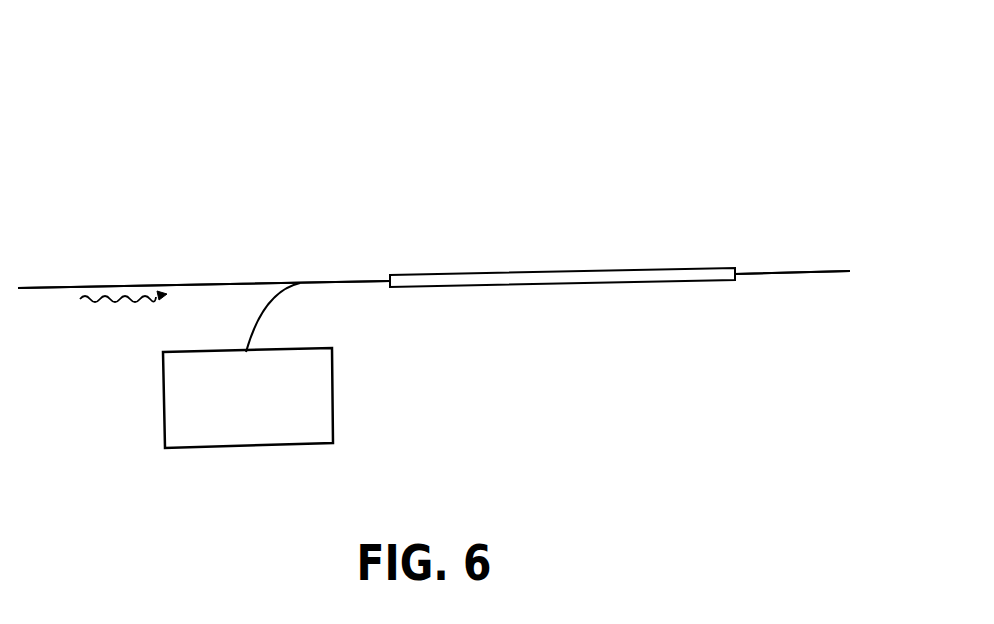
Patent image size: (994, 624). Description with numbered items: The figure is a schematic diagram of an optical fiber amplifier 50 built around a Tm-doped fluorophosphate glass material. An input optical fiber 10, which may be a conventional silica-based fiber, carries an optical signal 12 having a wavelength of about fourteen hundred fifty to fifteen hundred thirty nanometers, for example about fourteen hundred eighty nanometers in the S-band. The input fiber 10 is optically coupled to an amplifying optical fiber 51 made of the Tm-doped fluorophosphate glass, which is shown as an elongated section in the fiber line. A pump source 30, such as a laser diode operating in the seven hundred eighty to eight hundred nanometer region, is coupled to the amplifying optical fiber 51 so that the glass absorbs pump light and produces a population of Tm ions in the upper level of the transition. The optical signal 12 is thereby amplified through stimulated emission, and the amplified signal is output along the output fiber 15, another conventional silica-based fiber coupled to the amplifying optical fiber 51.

The optical fiber amplifier 50 is at (253, 147).
The input optical fiber 10 is at (186, 283).
The optical signal 12 is at (102, 303).
The output fiber 15 is at (802, 270).
The amplifying optical fiber 51 is at (547, 270).
The pump source 30 is at (287, 445).